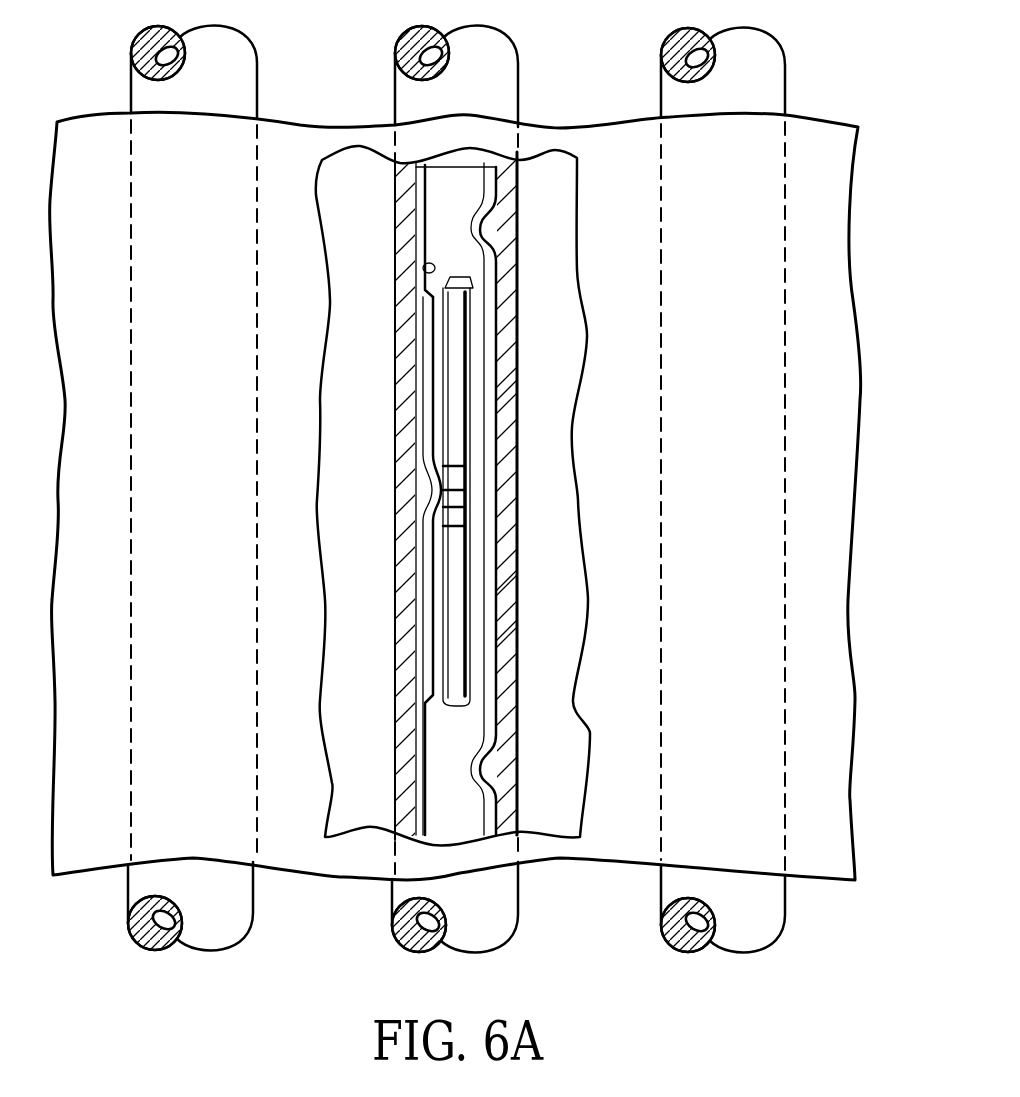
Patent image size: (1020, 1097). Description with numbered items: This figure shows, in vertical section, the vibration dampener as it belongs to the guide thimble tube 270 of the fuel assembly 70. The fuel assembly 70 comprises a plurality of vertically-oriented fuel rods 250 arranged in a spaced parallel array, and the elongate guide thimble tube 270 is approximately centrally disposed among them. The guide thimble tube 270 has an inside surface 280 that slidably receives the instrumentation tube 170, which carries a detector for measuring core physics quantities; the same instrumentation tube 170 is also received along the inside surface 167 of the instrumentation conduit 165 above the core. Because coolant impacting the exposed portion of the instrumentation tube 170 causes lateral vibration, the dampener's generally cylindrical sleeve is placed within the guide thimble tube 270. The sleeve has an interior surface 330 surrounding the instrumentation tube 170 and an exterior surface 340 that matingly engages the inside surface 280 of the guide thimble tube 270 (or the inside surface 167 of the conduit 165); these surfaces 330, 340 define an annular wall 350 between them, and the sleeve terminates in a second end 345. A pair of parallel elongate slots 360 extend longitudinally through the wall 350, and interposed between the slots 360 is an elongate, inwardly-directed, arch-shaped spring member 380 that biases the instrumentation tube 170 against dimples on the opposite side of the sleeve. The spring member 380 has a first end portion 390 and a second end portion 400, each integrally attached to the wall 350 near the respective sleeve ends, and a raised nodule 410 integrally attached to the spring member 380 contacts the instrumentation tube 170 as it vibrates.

The fuel assembly 70 is at (601, 135).
The fuel rods 250 is at (243, 87).
The instrumentation conduit 165 is at (402, 265).
The inside surface of conduit 167 is at (512, 338).
The instrumentation tube 170 is at (443, 222).
The guide thimble tube 270 is at (497, 222).
The inside surface of guide thimble tube 280 is at (517, 395).
The interior surface 330 is at (422, 267).
The exterior surface 340 is at (490, 578).
The second end 345 is at (497, 628).
The annular wall 350 is at (493, 485).
The slots 360 is at (472, 282).
The spring member 380 is at (455, 596).
The first end portion 390 is at (453, 297).
The second end portion 400 is at (456, 705).
The raised nodule 410 is at (453, 492).